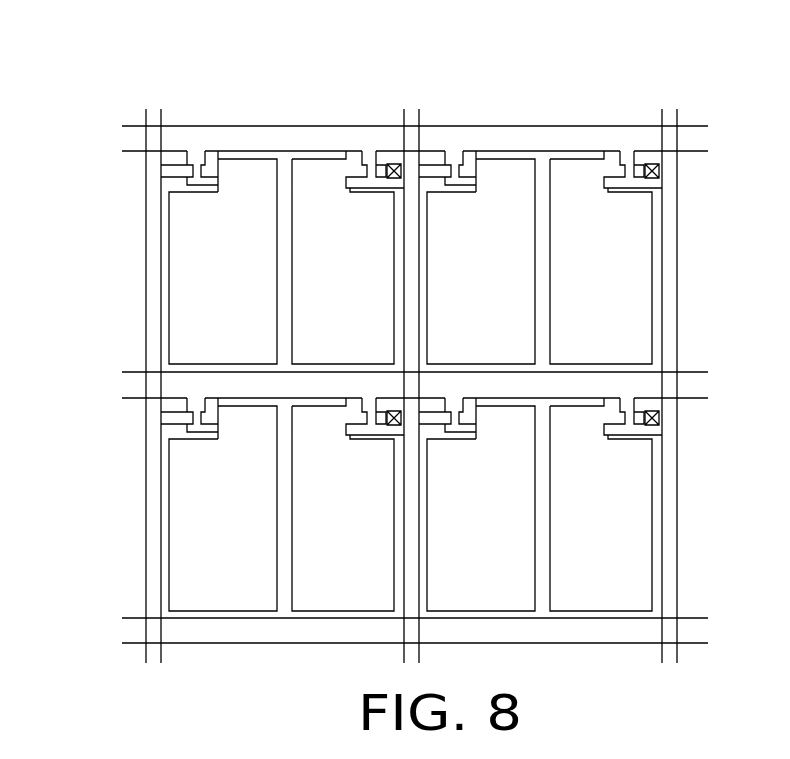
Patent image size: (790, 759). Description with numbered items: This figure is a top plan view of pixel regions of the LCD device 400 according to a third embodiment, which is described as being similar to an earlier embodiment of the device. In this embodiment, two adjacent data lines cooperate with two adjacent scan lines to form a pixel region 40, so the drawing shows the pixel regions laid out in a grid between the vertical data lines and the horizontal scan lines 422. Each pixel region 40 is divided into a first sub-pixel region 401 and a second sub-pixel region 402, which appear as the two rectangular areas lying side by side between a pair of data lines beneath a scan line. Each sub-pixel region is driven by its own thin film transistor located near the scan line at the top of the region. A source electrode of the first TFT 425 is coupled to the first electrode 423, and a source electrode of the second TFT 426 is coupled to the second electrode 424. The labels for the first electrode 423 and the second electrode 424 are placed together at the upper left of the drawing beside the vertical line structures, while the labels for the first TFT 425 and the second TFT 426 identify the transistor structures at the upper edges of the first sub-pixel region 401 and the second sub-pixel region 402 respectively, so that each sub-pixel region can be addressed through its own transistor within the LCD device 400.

The pixel region 40 is at (272, 108).
The LCD device 400 is at (514, 41).
The first sub-pixel region 401 is at (213, 157).
The second sub-pixel region 402 is at (352, 157).
The gate line 422 is at (133, 143).
The first electrode 423 is at (157, 356).
The second electrode 424 is at (151, 122).
The first TFT 425 is at (188, 187).
The second TFT 426 is at (390, 164).